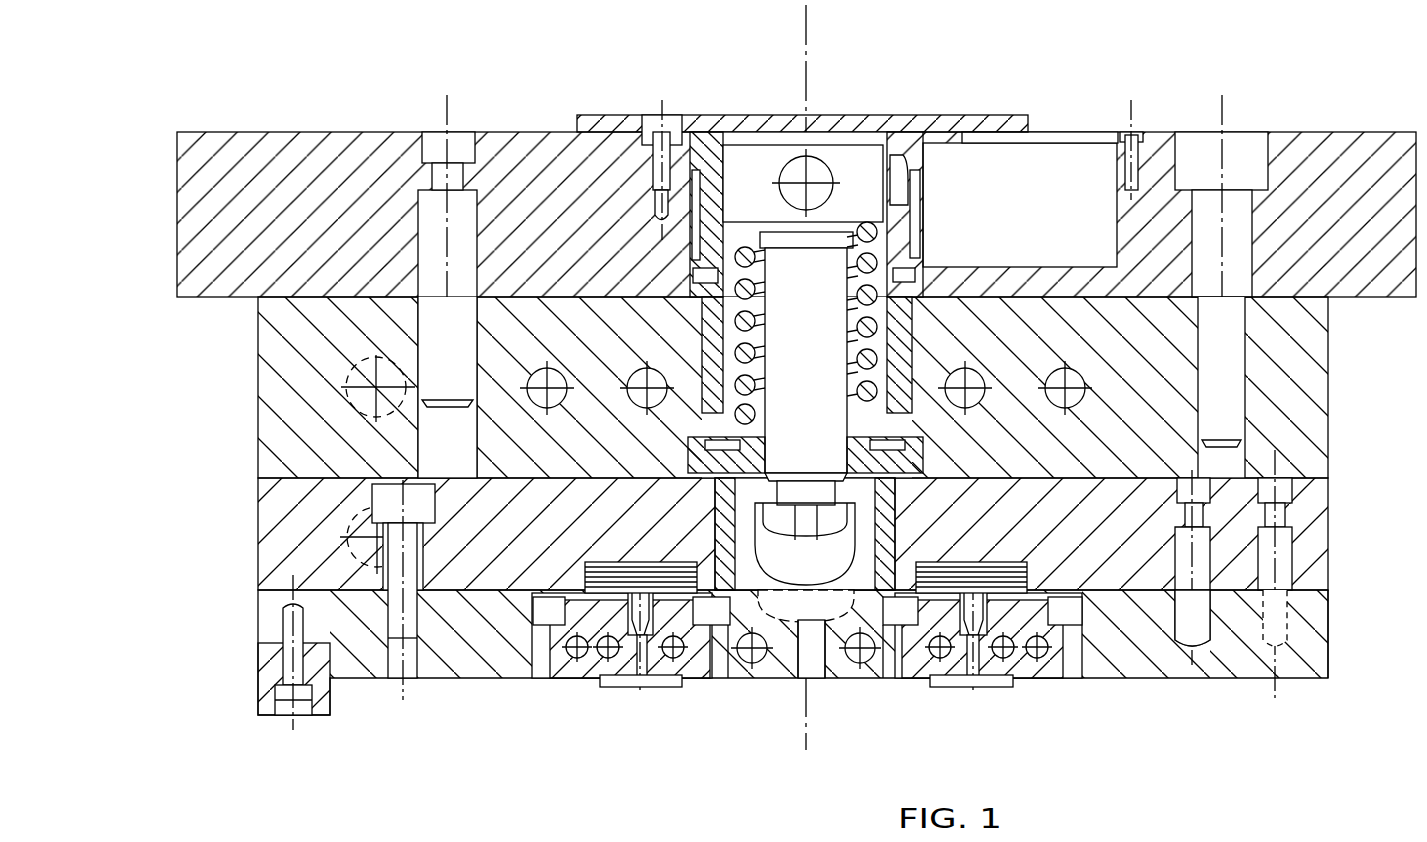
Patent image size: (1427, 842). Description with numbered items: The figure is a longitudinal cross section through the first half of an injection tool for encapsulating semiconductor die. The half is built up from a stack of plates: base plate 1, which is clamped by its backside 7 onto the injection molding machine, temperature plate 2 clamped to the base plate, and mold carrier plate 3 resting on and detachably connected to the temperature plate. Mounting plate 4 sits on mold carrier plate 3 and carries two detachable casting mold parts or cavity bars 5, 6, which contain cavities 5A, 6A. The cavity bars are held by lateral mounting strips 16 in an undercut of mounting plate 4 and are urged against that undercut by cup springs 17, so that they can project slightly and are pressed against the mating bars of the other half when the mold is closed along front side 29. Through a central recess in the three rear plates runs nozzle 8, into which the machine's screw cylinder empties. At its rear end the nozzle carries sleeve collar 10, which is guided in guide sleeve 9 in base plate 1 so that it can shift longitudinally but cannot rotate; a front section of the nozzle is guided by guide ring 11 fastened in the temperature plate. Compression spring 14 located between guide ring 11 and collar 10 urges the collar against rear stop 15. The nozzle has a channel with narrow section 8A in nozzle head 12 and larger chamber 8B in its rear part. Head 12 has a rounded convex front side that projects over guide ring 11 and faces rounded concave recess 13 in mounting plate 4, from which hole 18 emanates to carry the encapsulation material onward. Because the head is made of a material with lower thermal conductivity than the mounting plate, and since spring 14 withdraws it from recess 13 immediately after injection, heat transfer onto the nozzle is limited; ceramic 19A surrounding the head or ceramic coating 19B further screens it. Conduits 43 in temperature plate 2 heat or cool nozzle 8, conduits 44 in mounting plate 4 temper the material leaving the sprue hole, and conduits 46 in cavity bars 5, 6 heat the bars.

The base plate 1 is at (200, 192).
The temperature plate 2 is at (280, 385).
The mold carrier plate 3 is at (275, 538).
The mounting plate 4 is at (270, 628).
The casting mold part (cavity bar) 5 is at (552, 690).
The cavity 5A is at (612, 690).
The casting mold part (cavity bar) 6 is at (1068, 685).
The cavity 6A is at (992, 690).
The backside 7 is at (289, 125).
The nozzle (sprue) 8 is at (813, 293).
The narrow section (sprue hole) 8A is at (800, 500).
The larger chamber 8B is at (818, 495).
The guide sleeve 9 is at (724, 178).
The sleeve collar 10 is at (856, 165).
The guide ring 11 is at (690, 470).
The nozzle head 12 is at (815, 568).
The concave recess 13 is at (796, 688).
The compression spring 14 is at (880, 262).
The rear stop 15 is at (602, 115).
The lateral mounting strips 16 is at (548, 627).
The cup springs 17 is at (585, 577).
The hole 18 is at (812, 688).
The ceramic 19A is at (726, 685).
The ceramic coating 19B is at (888, 685).
The front side 29 is at (1301, 684).
The conduits 43 is at (645, 368).
The conduits 44 is at (751, 665).
The conduits 46 is at (607, 660).